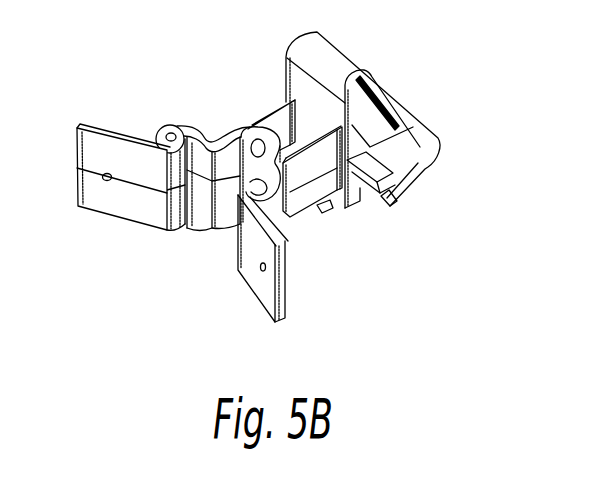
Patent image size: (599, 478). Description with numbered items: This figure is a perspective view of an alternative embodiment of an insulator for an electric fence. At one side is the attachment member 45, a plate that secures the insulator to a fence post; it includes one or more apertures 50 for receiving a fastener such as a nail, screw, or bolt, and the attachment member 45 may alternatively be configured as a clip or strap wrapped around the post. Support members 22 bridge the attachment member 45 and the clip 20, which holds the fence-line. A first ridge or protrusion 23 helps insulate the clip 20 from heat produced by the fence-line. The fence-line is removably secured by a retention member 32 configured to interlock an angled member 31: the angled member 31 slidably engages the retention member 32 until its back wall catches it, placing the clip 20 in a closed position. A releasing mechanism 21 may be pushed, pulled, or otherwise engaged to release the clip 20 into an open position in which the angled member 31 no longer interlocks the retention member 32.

The clip 20 is at (391, 93).
The releasing mechanism 21 is at (393, 205).
The support members 22 is at (277, 119).
The first ridge or protrusion 23 is at (367, 111).
The angled member 31 is at (393, 177).
The retention member 32 is at (333, 211).
The attachment member 45 is at (113, 134).
The apertures 50 is at (102, 178).